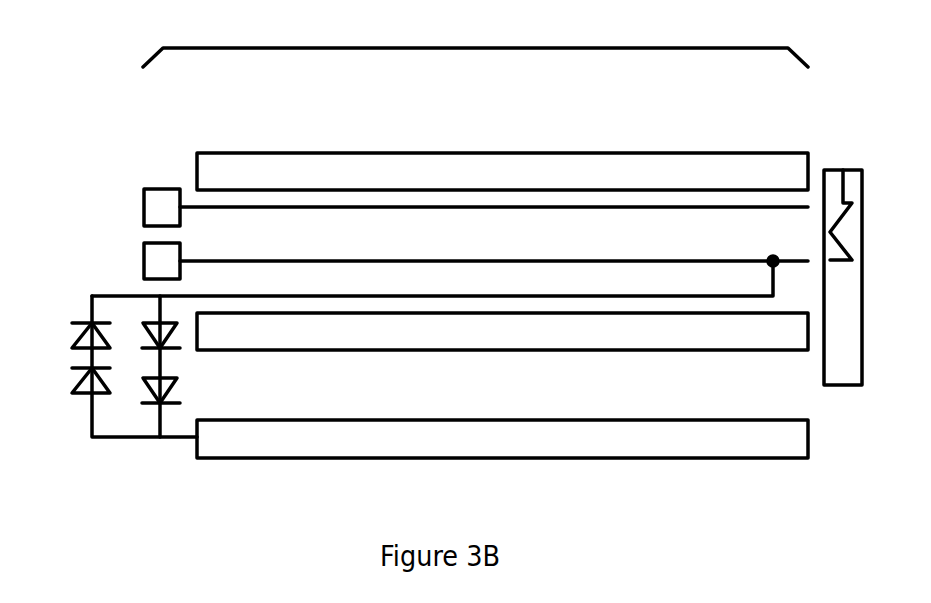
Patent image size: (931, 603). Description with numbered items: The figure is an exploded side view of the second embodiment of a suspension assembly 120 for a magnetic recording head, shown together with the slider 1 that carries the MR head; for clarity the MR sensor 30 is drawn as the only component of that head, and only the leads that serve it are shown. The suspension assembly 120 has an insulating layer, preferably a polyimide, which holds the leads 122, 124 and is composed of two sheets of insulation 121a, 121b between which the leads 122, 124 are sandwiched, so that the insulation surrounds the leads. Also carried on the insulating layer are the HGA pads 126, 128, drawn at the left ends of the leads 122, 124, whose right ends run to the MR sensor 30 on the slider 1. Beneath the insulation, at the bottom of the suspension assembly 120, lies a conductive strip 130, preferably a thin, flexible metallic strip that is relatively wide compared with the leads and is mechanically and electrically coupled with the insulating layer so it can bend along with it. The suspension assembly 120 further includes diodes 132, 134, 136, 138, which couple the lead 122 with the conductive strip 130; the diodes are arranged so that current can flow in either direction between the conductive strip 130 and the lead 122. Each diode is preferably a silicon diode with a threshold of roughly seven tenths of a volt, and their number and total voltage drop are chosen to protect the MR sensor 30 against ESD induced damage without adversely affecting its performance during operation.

The suspension assembly 120 is at (475, 48).
The sheet of insulation 121a is at (648, 153).
The sheet of insulation 121b is at (283, 350).
The conductive strip 130 is at (317, 458).
The slider 1 is at (843, 385).
The MR sensor 30 is at (843, 170).
The lead 124 is at (562, 207).
The lead 122 is at (407, 260).
The HGA pad 128 is at (160, 189).
The HGA pad 126 is at (144, 262).
The diode 138 is at (72, 348).
The diode 136 is at (72, 393).
The diode 134 is at (146, 325).
The diode 132 is at (143, 378).